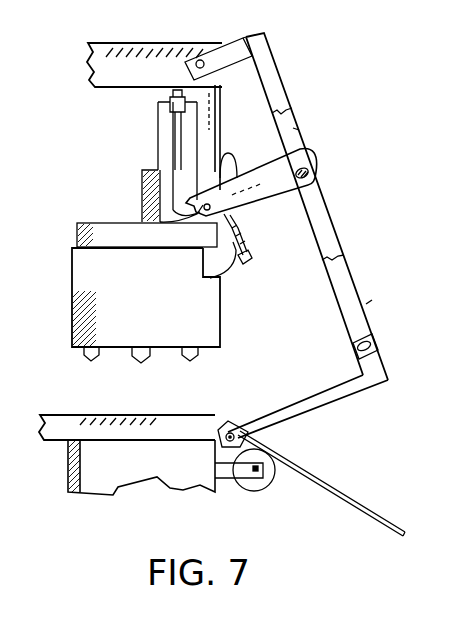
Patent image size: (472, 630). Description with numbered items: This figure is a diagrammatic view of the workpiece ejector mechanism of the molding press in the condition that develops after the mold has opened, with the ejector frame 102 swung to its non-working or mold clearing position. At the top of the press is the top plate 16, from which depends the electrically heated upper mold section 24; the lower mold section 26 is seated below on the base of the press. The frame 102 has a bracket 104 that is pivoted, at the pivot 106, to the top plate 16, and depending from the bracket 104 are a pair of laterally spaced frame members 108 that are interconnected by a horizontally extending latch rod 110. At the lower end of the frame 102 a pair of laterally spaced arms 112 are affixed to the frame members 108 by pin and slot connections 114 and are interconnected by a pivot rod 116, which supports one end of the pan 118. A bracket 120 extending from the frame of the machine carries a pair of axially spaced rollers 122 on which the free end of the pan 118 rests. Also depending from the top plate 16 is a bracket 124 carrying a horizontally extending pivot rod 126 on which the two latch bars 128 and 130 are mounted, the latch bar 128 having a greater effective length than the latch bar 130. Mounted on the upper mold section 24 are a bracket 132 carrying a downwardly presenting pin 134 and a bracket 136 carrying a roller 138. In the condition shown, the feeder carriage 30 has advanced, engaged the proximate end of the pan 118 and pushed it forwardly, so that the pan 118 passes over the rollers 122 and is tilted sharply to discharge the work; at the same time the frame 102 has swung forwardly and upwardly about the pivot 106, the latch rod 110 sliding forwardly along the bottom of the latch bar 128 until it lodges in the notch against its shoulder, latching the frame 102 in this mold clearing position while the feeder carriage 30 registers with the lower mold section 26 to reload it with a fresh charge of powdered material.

The top plate 16 is at (148, 54).
The upper mold section 24 is at (149, 300).
The lower mold section 26 is at (145, 472).
The feeder carriage 30 is at (68, 420).
The frame 102 is at (375, 302).
The bracket 104 is at (237, 48).
The pivot 106 is at (201, 58).
The frame members 108 is at (278, 97).
The latch rod 110 is at (313, 173).
The arms 112 is at (386, 360).
The pin and slot connections 114 is at (362, 340).
The pivot rod 116 is at (229, 425).
The pan 118 is at (370, 512).
The bracket 120 is at (249, 480).
The rollers 122 is at (285, 470).
The bracket 124 is at (163, 88).
The pivot rod 126 is at (147, 211).
The latch bar 128 is at (300, 153).
The latch bar 130 is at (167, 106).
The bracket 132 is at (142, 170).
The pin 134 is at (170, 142).
The bracket 136 is at (213, 234).
The roller 138 is at (298, 130).